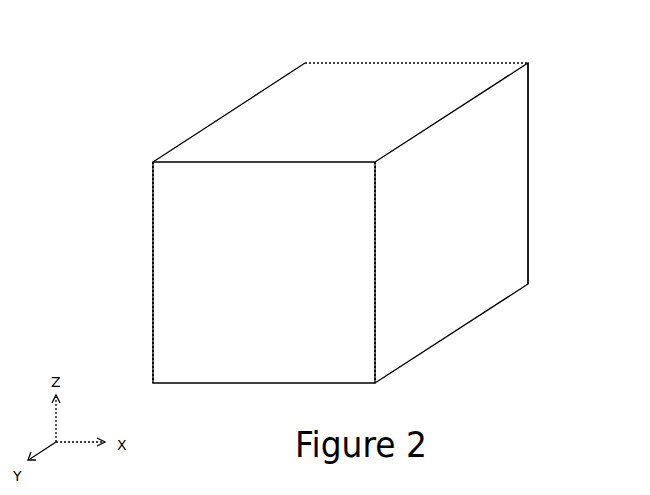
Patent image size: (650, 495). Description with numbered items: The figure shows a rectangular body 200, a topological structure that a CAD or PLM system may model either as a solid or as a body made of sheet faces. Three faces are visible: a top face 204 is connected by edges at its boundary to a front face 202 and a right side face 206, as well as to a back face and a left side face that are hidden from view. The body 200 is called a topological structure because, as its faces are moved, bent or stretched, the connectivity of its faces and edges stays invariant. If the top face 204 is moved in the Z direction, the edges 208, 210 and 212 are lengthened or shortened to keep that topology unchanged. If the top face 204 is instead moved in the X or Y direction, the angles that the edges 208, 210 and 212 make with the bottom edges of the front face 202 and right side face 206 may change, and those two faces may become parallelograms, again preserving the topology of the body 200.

The rectangular body 200 is at (606, 46).
The front face 202 is at (283, 287).
The top face 204 is at (367, 124).
The right side face 206 is at (473, 231).
The edge 208 is at (153, 272).
The edge 210 is at (375, 261).
The edge 212 is at (528, 180).